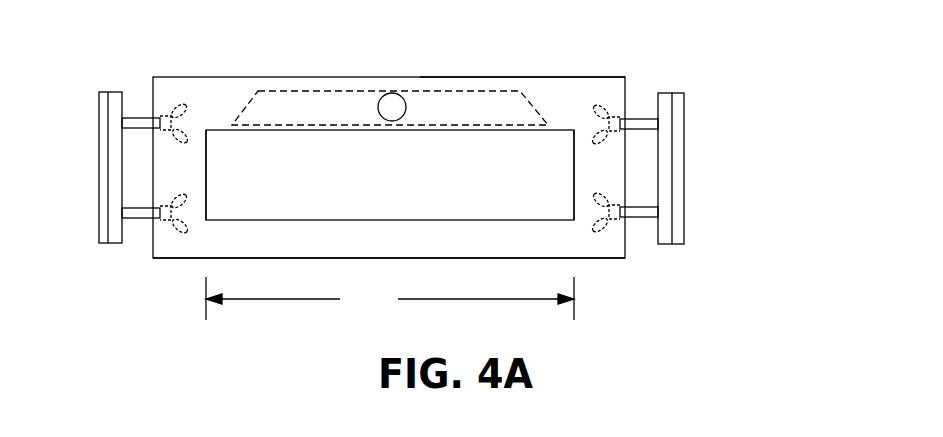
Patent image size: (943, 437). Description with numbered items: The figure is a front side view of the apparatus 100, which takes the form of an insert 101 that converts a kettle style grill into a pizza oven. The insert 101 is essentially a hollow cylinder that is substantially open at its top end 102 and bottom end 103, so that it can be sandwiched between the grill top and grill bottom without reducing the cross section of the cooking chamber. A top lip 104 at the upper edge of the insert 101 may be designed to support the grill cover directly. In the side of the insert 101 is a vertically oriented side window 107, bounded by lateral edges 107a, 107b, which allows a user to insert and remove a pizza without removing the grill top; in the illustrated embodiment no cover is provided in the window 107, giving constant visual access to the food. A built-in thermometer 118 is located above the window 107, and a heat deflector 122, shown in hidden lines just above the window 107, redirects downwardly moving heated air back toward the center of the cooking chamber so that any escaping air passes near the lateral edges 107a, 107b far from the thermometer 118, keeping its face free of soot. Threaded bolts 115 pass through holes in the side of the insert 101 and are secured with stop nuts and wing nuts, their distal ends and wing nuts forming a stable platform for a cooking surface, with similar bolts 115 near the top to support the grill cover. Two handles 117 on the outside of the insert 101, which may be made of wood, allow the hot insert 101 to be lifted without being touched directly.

The apparatus 100 is at (710, 139).
The insert 101 is at (283, 91).
The top end 102 is at (487, 77).
The bottom end 103 is at (458, 259).
The top lip 104 is at (590, 77).
The side window 107 is at (405, 195).
The lateral edge of window 107a is at (206, 193).
The lateral edge of window 107b is at (596, 180).
The threaded bolts 115 is at (146, 114).
The handles 117 is at (103, 205).
The thermometer 118 is at (406, 107).
The heat deflector 122 is at (350, 103).